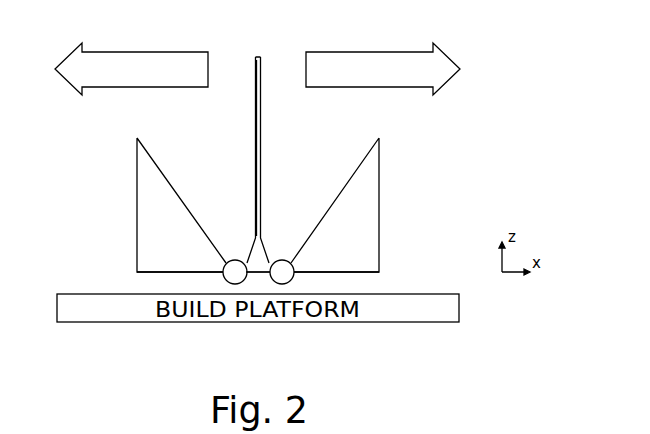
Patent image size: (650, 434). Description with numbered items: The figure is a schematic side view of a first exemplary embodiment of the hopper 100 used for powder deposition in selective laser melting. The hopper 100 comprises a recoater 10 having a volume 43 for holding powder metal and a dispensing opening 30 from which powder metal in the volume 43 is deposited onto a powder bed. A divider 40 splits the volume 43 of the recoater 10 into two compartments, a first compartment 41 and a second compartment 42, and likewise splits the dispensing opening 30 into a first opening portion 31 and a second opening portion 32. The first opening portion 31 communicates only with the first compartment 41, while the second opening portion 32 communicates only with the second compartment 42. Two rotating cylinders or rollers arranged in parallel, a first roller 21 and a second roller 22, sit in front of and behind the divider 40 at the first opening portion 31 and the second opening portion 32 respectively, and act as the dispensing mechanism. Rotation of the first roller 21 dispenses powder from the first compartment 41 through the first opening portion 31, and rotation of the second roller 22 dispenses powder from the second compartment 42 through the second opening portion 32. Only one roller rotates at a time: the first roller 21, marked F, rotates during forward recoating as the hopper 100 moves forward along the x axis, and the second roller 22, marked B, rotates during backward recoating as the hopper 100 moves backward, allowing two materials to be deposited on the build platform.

The hopper 100 is at (483, 33).
The recoater 10 is at (368, 205).
The first roller 21 is at (222, 266).
The second roller 22 is at (298, 266).
The dispensing opening 30 is at (258, 283).
The first opening portion 31 is at (226, 283).
The second opening portion 32 is at (297, 282).
The divider 40 is at (257, 62).
The volume 43 is at (273, 103).
The first compartment 41 is at (202, 153).
The second compartment 42 is at (315, 153).